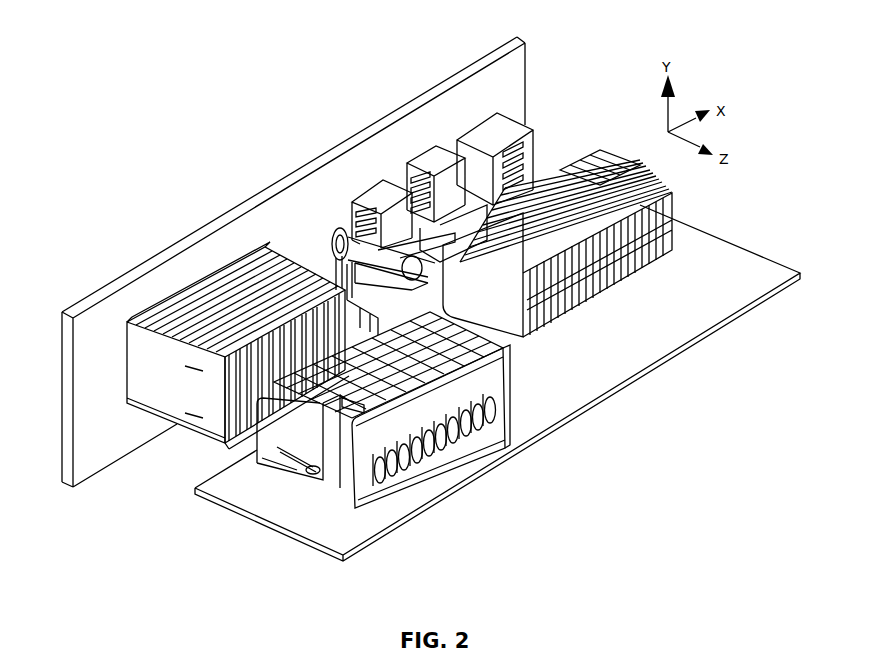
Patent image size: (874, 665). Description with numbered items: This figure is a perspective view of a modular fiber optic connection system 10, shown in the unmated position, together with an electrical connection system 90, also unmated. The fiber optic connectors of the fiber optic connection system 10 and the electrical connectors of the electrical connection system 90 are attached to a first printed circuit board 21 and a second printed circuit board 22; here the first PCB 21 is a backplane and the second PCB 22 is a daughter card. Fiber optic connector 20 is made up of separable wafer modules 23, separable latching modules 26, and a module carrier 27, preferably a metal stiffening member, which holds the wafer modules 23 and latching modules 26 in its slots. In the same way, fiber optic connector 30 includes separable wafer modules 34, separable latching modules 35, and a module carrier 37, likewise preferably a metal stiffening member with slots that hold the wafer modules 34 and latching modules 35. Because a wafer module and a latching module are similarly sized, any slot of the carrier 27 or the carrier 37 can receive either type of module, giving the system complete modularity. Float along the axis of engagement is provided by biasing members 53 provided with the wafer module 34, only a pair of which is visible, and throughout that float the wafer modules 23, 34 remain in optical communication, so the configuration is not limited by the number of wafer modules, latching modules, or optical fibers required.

The modular fiber optic connection system 10 is at (167, 167).
The electrical connection system 90 is at (397, 44).
The fiber optic connector 20 is at (247, 228).
The first printed circuit board 21 is at (518, 57).
The second printed circuit board 22 is at (752, 297).
The separable wafer module 23 is at (195, 322).
The separable latching module 26 is at (178, 337).
The module carrier 27 is at (207, 287).
The fiber optic connector 30 is at (470, 487).
The separable wafer module 34 is at (440, 337).
The separable latching module 35 is at (290, 432).
The module carrier 37 is at (437, 374).
The biasing member 53 is at (356, 402).